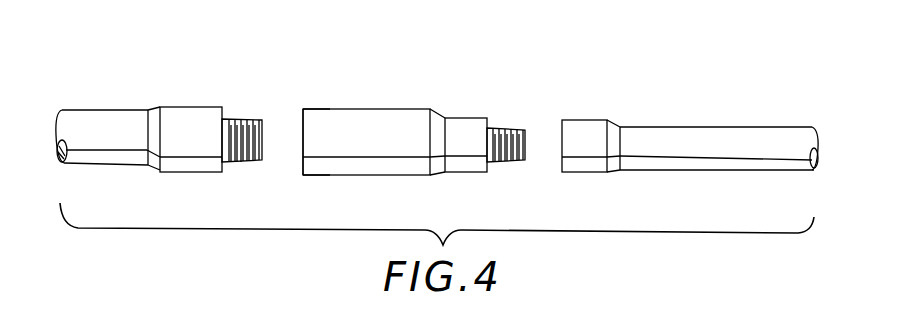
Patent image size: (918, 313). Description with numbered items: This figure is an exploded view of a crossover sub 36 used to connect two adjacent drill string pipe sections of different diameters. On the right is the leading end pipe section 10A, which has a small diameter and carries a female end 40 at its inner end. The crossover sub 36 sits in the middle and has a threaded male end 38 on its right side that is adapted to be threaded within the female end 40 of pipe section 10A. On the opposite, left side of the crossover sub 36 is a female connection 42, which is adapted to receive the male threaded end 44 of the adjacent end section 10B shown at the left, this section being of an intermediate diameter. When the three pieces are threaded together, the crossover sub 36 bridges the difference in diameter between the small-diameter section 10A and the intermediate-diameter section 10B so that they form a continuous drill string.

The adjacent end section 10B is at (108, 108).
The male threaded end 44 is at (243, 118).
The crossover sub 36 is at (370, 104).
The female connection 42 is at (303, 130).
The threaded male end 38 is at (503, 127).
The female end 40 is at (583, 119).
The leading end pipe section 10A is at (692, 126).